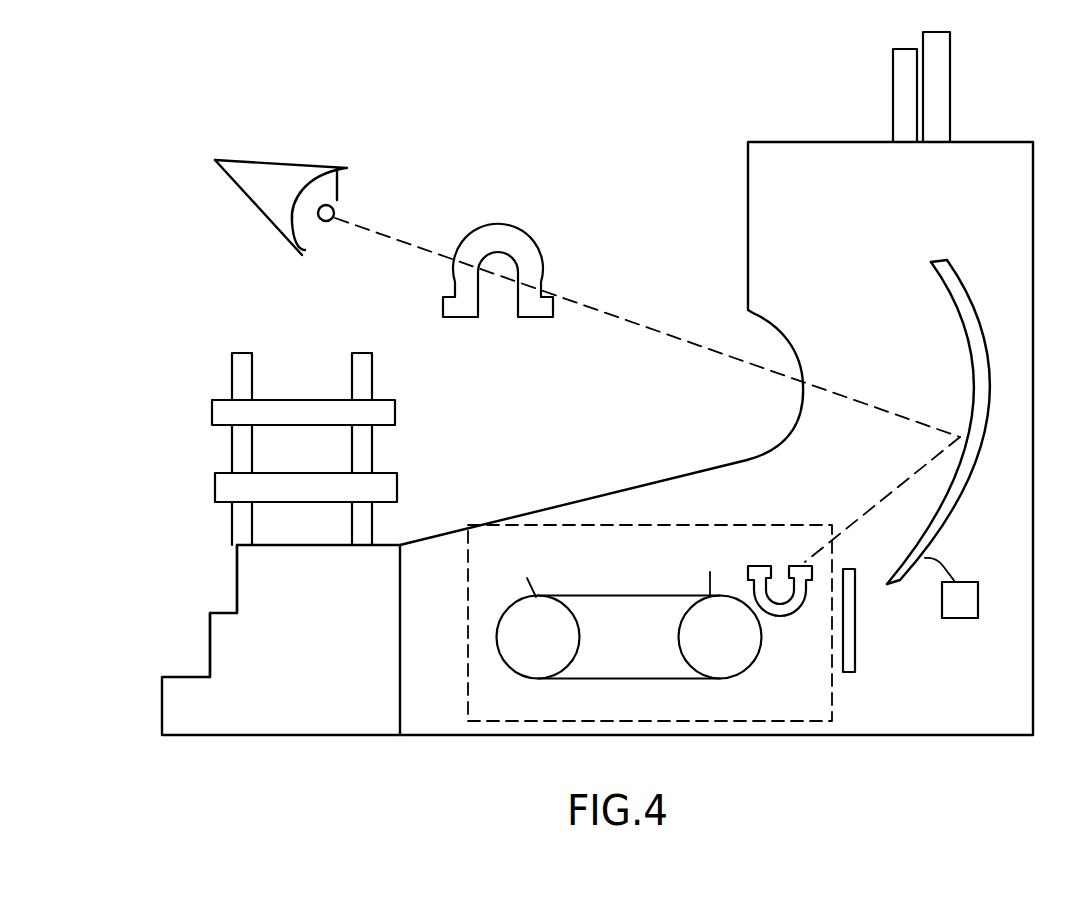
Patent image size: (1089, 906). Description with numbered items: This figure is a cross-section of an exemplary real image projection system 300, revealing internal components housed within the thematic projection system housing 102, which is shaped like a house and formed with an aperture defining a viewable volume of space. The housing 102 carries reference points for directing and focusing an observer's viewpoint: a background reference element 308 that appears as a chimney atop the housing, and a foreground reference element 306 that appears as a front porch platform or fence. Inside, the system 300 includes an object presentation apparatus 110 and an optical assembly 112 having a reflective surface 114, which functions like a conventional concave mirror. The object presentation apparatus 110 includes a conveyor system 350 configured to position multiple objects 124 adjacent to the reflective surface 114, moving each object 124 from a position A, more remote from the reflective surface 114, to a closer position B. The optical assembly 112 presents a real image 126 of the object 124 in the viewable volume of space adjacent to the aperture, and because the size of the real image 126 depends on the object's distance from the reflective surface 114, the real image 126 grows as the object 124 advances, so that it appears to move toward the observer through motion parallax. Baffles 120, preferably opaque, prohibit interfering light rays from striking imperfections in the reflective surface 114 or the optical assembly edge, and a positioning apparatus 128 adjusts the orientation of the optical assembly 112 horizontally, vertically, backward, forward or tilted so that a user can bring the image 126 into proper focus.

The real image projection system 300 is at (616, 125).
The projection system housing 102 is at (588, 497).
The background reference element 308 is at (951, 108).
The foreground reference element 306 is at (252, 356).
The real image 126 is at (522, 245).
The optical assembly 112 is at (973, 255).
The reflective surface 114 is at (970, 376).
The positioning apparatus 128 is at (978, 596).
The baffles 120 is at (857, 665).
The object presentation apparatus 110 is at (832, 720).
The object 124 is at (776, 530).
The conveyor system 350 is at (483, 686).